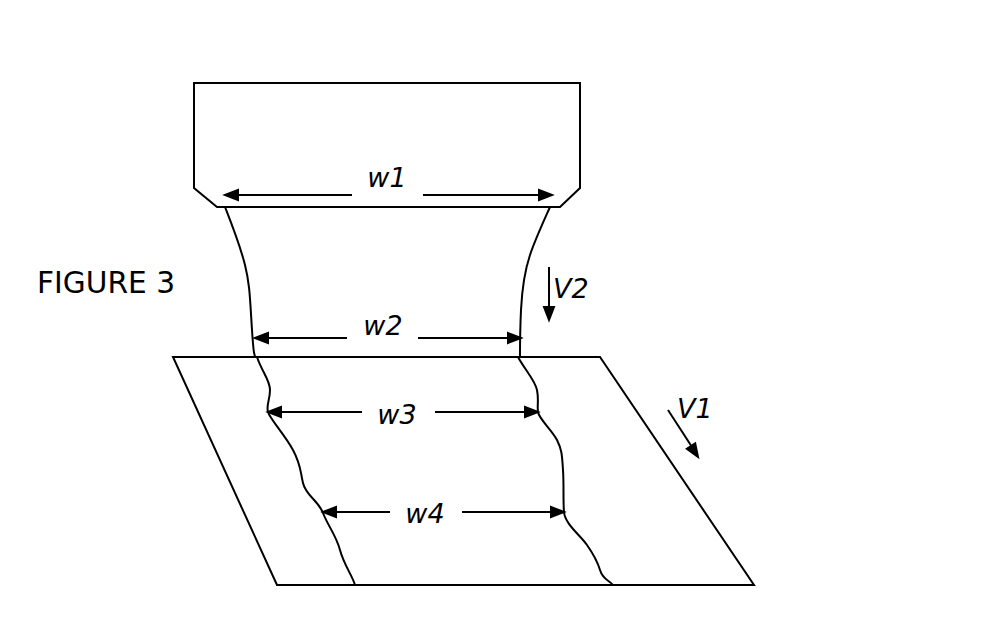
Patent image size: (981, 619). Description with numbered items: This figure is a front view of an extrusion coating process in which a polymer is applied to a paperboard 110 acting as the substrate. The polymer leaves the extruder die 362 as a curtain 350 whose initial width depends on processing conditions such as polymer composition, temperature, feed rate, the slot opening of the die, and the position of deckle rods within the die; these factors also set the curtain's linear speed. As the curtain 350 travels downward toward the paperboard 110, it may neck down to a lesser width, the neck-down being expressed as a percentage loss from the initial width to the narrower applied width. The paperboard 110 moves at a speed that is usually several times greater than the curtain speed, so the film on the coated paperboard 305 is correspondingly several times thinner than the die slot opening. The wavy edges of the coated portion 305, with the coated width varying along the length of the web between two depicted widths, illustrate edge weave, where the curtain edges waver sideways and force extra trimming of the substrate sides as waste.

The extruder die 362 is at (362, 128).
The curtain 350 is at (370, 270).
The coated paperboard 305 is at (456, 474).
The paperboard 110 is at (582, 380).